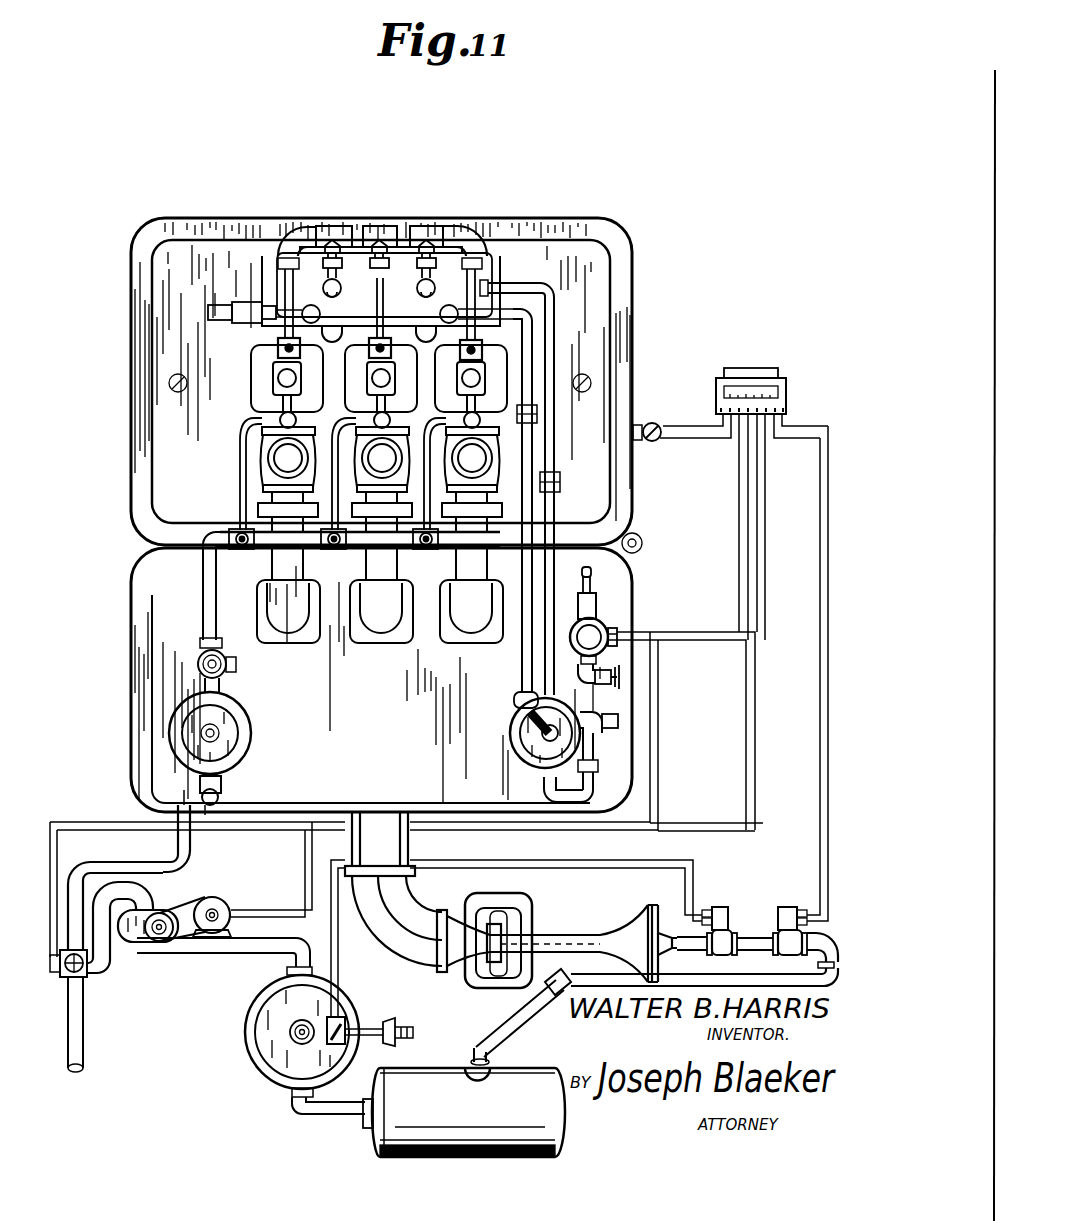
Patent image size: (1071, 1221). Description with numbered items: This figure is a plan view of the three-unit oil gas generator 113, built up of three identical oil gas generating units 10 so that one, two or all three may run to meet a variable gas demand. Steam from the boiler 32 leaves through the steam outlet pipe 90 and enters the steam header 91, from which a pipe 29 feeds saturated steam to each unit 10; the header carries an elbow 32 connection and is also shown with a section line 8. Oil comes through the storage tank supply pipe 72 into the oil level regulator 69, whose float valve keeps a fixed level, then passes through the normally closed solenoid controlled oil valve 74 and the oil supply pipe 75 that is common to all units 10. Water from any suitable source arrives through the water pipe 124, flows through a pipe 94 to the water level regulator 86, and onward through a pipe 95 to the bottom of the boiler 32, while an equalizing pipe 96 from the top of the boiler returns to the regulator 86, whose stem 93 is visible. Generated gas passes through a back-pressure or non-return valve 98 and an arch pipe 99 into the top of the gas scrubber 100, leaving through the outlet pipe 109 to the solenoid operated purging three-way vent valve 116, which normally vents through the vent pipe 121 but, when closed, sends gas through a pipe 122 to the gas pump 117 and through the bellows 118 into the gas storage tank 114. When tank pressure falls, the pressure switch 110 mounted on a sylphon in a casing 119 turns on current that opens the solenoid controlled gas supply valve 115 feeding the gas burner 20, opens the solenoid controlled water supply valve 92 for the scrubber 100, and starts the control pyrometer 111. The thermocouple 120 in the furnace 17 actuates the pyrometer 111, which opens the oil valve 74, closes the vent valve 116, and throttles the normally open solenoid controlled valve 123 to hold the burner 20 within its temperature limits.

The section line 8 is at (380, 226).
The oil gas generating unit 10 is at (258, 356).
The furnace 17 is at (195, 312).
The gas burner 20 is at (603, 918).
The pipe 29 is at (287, 303).
The boiler 32 is at (447, 270).
The oil level regulator 69 is at (196, 752).
The storage tank supply pipe 72 is at (217, 805).
The solenoid controlled oil valve 74 is at (198, 664).
The oil supply pipe 75 is at (208, 604).
The water level regulator 86 is at (542, 765).
The steam outlet pipe 90 is at (328, 265).
The steam header 91 is at (287, 234).
The solenoid controlled water supply valve 92 is at (606, 630).
The valve stem 93 is at (595, 578).
The pipe 94 is at (592, 750).
The pipe 95 is at (552, 314).
The equalizing pipe 96 is at (523, 452).
The back-pressure or non-return valve 98 is at (380, 463).
The arch pipe 99 is at (360, 483).
The gas scrubber 100 is at (634, 684).
The outlet pipe 109 is at (134, 872).
The pressure switch 110 is at (342, 1014).
The control pyrometer 111 is at (742, 368).
The three-unit oil gas generator 113 is at (732, 297).
The gas storage tank 114 is at (392, 1139).
The solenoid controlled gas supply valve 115 is at (720, 946).
The solenoid operated purging three-way vent valve 116 is at (74, 979).
The gas pump 117 is at (128, 940).
The bellows 118 is at (410, 1024).
The casing 119 is at (258, 1033).
The thermocouple 120 is at (658, 441).
The vent pipe 121 is at (80, 1049).
The pipe 122 is at (160, 893).
The solenoid controlled valve 123 is at (789, 908).
The water pipe 124 is at (618, 721).